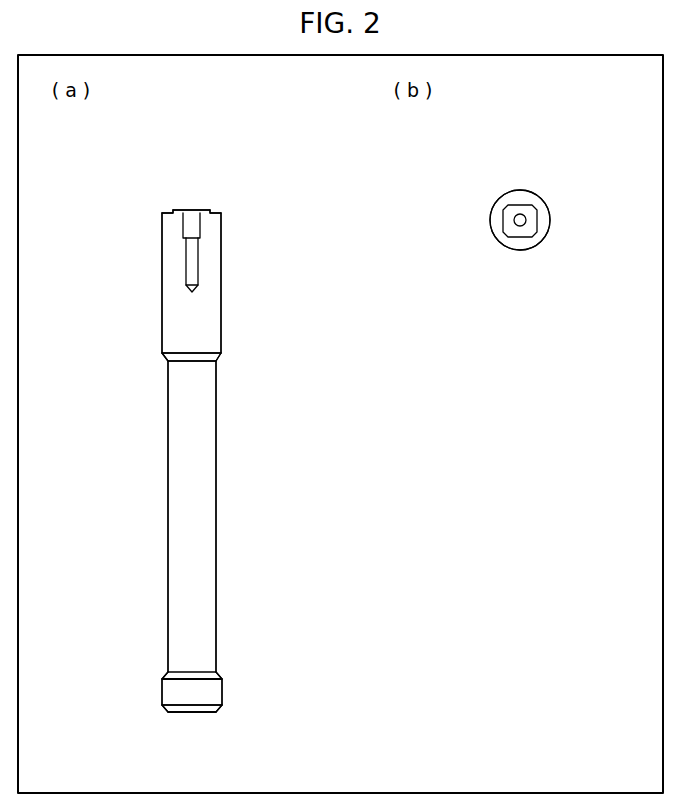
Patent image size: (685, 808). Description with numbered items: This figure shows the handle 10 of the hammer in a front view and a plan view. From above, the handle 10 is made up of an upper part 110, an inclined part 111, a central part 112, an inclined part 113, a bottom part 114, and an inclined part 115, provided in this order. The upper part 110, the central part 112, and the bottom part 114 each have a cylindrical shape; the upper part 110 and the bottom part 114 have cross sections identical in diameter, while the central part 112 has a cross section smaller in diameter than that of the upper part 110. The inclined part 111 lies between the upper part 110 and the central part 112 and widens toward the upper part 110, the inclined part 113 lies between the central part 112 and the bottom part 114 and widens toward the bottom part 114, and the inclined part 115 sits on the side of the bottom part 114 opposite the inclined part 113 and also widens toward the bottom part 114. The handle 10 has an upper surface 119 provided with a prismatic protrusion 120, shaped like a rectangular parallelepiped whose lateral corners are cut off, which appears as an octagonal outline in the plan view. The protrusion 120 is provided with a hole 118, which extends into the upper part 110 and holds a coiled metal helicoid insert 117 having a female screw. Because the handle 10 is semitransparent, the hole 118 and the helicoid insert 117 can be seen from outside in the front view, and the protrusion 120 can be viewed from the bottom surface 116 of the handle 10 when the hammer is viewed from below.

The handle 10 is at (279, 150).
The upper part 110 is at (162, 318).
The inclined part 111 is at (216, 363).
The central part 112 is at (208, 523).
The inclined part 113 is at (218, 673).
The bottom part 114 is at (222, 692).
The inclined part 115 is at (218, 708).
The bottom surface 116 is at (195, 714).
The helicoid insert 117 is at (202, 228).
The hole 118 is at (198, 272).
The upper surface 119 is at (168, 213).
The protrusion 120 is at (203, 210).